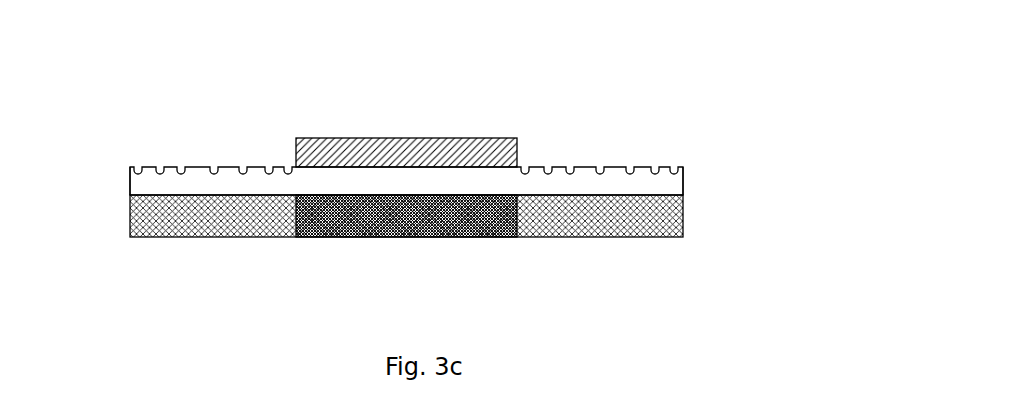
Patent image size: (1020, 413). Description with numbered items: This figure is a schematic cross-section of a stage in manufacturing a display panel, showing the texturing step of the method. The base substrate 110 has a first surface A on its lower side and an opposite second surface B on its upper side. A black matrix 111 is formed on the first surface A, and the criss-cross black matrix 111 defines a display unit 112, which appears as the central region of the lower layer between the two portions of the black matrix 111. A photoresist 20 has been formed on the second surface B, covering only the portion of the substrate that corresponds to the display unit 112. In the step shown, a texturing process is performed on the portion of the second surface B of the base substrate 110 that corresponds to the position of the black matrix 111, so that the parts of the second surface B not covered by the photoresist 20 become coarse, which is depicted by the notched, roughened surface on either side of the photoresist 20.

The photoresist 20 is at (352, 157).
The base substrate 110 is at (578, 180).
The black matrix 111 is at (674, 225).
The display unit 112 is at (412, 215).
The first surface A is at (130, 196).
The second surface B is at (683, 168).